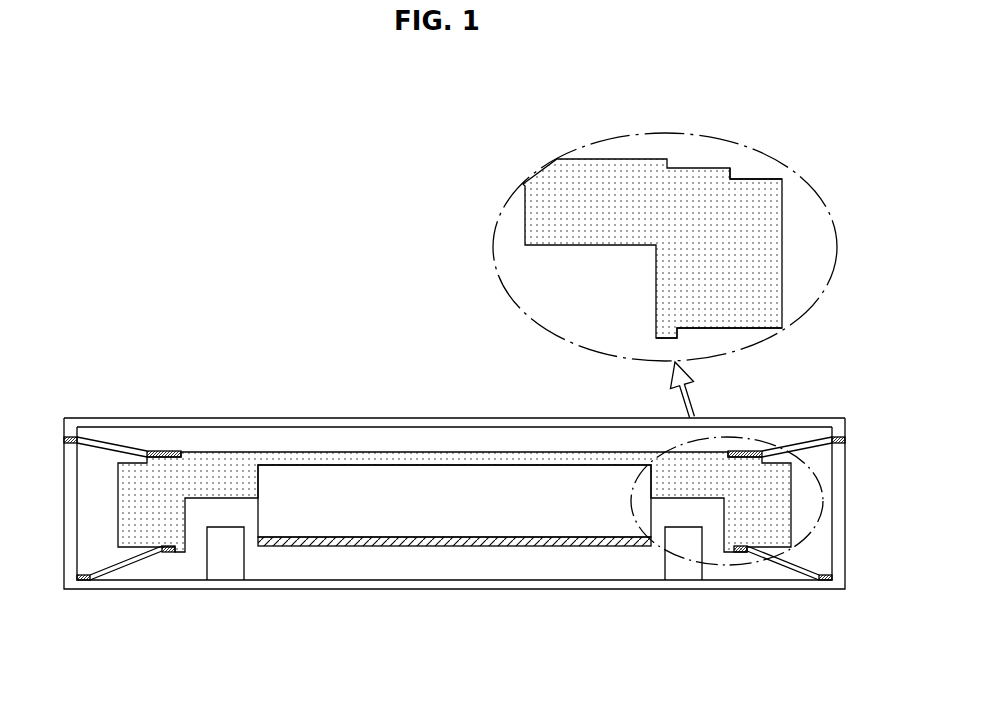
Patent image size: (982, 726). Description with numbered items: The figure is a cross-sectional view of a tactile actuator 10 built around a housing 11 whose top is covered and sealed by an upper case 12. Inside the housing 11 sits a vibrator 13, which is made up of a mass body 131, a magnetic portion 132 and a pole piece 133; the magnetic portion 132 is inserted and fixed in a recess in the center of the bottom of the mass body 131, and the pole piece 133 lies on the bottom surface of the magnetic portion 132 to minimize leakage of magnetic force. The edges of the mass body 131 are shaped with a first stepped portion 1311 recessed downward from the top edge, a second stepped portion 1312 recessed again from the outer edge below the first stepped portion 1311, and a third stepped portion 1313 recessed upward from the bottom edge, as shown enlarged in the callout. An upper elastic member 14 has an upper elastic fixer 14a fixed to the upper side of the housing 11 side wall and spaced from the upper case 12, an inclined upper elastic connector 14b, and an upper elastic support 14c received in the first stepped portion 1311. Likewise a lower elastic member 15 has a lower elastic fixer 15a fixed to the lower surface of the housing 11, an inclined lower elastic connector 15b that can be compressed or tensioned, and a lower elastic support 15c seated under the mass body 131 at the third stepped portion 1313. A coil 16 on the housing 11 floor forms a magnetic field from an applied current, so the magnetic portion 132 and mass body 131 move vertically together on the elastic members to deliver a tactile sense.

The tactile actuator 10 is at (453, 124).
The housing 11 is at (460, 585).
The upper case 12 is at (500, 422).
The vibrator 13 is at (454, 433).
The mass body 131 is at (237, 462).
The magnetic portion 132 is at (328, 487).
The pole piece 133 is at (390, 540).
The first stepped portion 1311 is at (697, 168).
The second stepped portion 1312 is at (755, 178).
The third stepped portion 1313 is at (710, 328).
The upper elastic member 14 is at (436, 386).
The upper elastic fixer 14a is at (70, 437).
The upper elastic connector 14b is at (112, 444).
The upper elastic support 14c is at (454, 409).
The lower elastic member 15 is at (444, 624).
The lower elastic fixer 15a is at (84, 581).
The lower elastic connector 15b is at (127, 563).
The lower elastic support 15c is at (454, 602).
The coil 16 is at (685, 573).